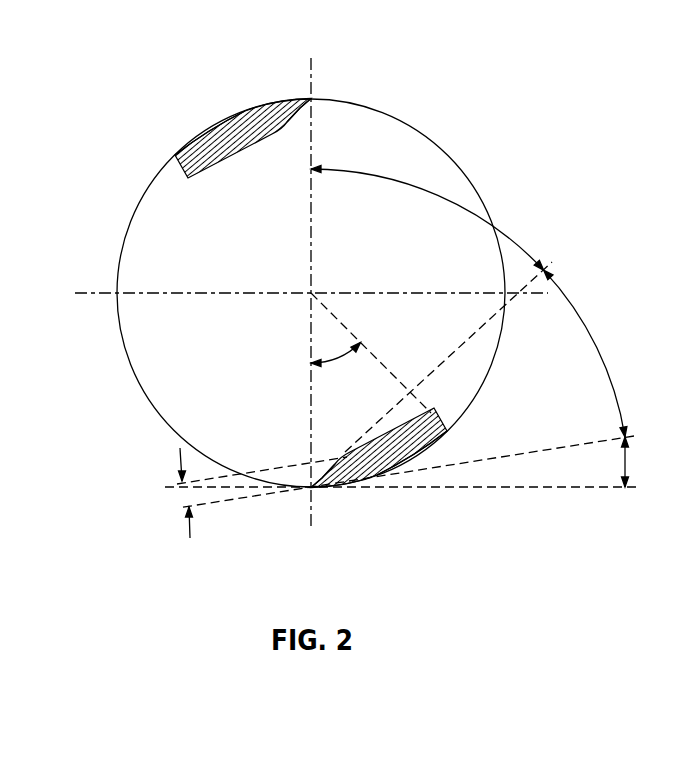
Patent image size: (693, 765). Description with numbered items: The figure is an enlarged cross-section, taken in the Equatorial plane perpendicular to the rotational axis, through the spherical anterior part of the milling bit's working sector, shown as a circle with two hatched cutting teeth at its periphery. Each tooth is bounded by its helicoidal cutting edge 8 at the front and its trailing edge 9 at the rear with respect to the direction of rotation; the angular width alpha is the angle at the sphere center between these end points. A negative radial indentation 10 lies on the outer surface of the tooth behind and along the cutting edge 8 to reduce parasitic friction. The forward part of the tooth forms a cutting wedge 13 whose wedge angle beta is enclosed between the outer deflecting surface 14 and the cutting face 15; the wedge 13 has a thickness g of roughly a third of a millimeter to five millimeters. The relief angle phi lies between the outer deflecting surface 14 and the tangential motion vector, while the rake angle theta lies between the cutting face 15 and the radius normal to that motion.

The cutting edge 8 is at (311, 98).
The trailing edge 9 is at (180, 161).
The negative radial indentation 10 is at (244, 114).
The cutting wedge 13 is at (320, 501).
The outer deflecting surface 14 is at (341, 489).
The cutting face 15 is at (322, 470).
The thickness g is at (190, 527).